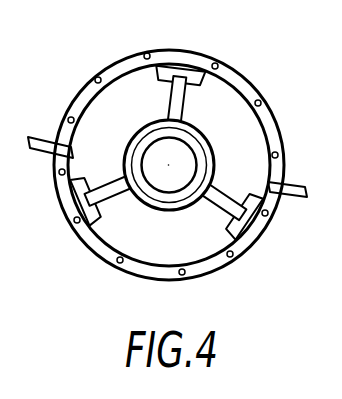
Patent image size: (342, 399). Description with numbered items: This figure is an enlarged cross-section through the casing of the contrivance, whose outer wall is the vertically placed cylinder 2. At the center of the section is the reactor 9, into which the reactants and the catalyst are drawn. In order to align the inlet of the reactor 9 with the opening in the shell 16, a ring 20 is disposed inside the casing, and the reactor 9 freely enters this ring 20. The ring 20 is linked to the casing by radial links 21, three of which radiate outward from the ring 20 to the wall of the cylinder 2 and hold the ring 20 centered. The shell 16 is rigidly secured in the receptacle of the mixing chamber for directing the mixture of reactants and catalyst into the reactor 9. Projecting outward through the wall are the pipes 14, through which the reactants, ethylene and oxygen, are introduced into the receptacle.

The cylinder 2 is at (134, 262).
The reactor 9 is at (137, 136).
The pipes 14 is at (41, 143).
The shell 16 is at (197, 164).
The ring 20 is at (203, 137).
The radial links 21 is at (168, 64).